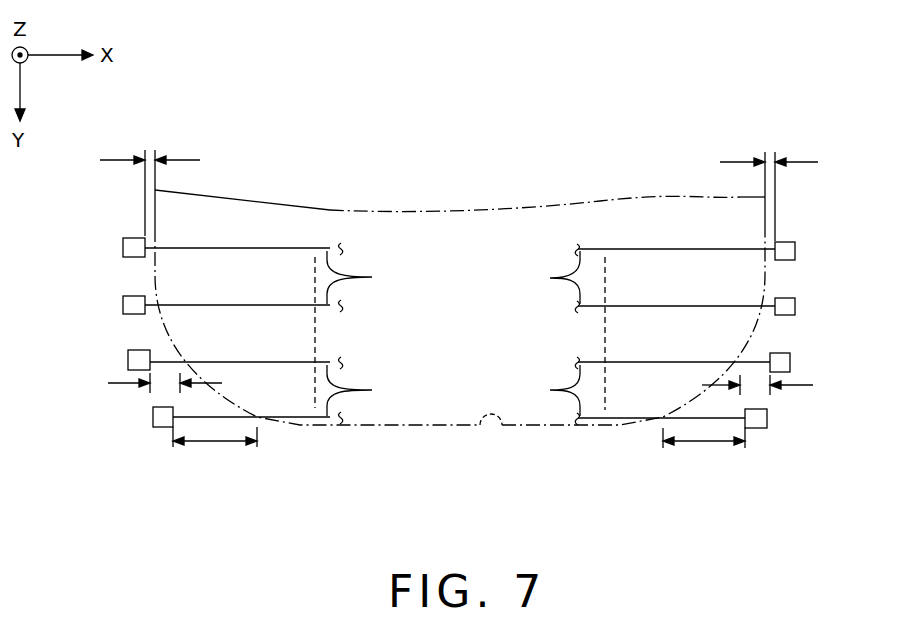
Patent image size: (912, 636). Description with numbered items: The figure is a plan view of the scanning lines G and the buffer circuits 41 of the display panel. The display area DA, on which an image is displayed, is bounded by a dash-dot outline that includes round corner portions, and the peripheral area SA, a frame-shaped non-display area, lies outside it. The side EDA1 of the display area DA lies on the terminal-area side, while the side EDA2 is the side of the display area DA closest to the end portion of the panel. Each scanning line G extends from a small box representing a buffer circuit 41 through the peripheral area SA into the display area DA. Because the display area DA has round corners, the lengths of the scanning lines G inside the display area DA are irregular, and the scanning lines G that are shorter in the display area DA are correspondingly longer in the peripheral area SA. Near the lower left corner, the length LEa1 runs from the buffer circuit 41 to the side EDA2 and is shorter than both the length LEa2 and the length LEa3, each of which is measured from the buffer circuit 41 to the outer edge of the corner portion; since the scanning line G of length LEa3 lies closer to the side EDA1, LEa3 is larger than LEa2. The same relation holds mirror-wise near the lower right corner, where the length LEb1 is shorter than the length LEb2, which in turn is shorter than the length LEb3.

The buffer circuit 41 is at (122, 248).
The side of the display area in the terminal area EDA1 is at (405, 427).
The side of the display area closest to the end portion EDA2 is at (157, 217).
The display area DA is at (502, 426).
The peripheral area SA is at (309, 466).
The scanning lines G is at (460, 333).
The length LEa1 is at (149, 150).
The length LEa2 is at (166, 386).
The length LEa3 is at (215, 446).
The length LEb1 is at (768, 151).
The length LEb2 is at (755, 388).
The length LEb3 is at (705, 446).